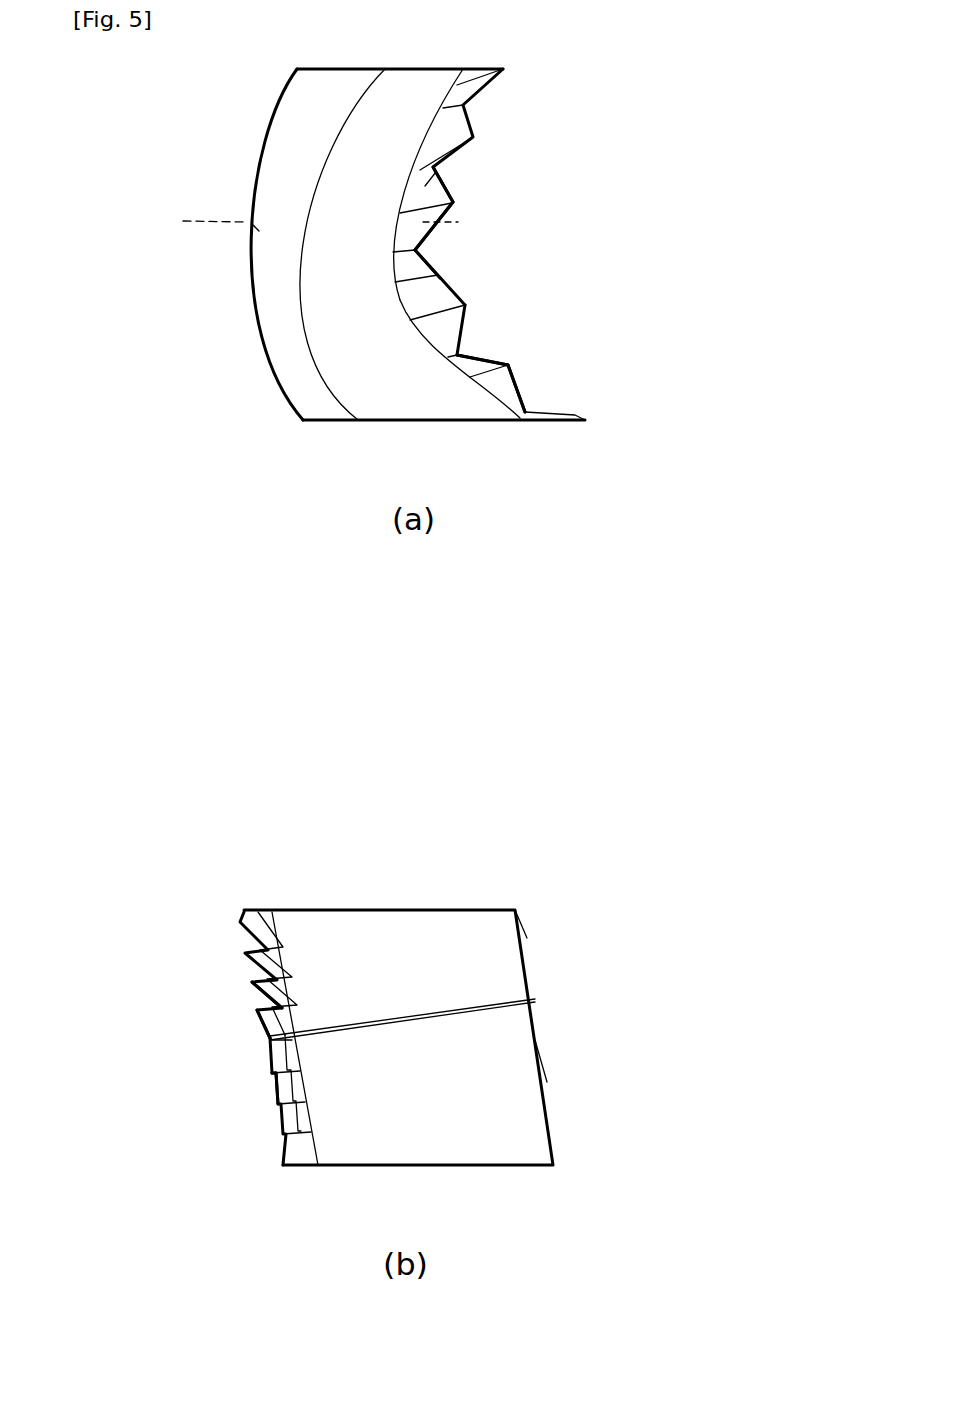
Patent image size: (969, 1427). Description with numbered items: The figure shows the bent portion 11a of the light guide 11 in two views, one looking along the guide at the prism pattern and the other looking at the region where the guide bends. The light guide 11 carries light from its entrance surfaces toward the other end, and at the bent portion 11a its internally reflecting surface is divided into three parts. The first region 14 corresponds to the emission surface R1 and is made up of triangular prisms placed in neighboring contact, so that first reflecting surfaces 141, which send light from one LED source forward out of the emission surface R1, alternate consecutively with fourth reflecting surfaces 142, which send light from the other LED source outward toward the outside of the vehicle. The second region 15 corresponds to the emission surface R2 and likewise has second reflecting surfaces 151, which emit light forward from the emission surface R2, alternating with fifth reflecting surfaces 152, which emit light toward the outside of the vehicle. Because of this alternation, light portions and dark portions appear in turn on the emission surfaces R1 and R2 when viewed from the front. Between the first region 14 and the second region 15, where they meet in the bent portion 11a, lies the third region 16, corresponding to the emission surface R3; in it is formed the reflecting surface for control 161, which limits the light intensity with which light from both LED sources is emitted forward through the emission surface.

The light guide 11 is at (254, 100).
The bent portion 11a is at (271, 276).
The emission surface R1 is at (527, 938).
The emission surface R2 is at (547, 1082).
The emission surface R3 is at (535, 1003).
The first region 14 is at (503, 152).
The first reflecting surfaces 141 is at (458, 220).
The fourth reflecting surfaces 142 is at (443, 175).
The third region 16 is at (445, 251).
The reflecting surface for control 161 is at (420, 245).
The second region 15 is at (520, 338).
The second reflecting surfaces 151 is at (430, 290).
The fifth reflecting surfaces 152 is at (442, 330).